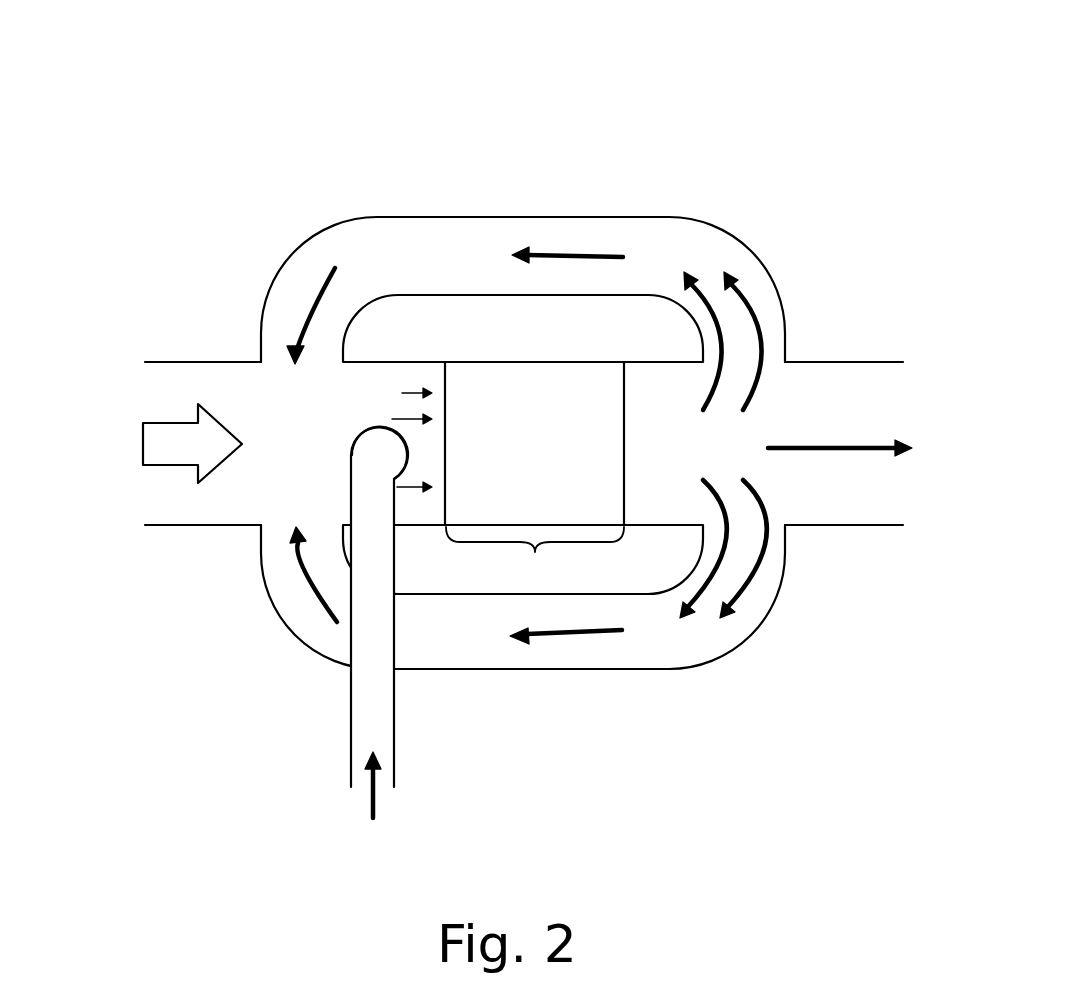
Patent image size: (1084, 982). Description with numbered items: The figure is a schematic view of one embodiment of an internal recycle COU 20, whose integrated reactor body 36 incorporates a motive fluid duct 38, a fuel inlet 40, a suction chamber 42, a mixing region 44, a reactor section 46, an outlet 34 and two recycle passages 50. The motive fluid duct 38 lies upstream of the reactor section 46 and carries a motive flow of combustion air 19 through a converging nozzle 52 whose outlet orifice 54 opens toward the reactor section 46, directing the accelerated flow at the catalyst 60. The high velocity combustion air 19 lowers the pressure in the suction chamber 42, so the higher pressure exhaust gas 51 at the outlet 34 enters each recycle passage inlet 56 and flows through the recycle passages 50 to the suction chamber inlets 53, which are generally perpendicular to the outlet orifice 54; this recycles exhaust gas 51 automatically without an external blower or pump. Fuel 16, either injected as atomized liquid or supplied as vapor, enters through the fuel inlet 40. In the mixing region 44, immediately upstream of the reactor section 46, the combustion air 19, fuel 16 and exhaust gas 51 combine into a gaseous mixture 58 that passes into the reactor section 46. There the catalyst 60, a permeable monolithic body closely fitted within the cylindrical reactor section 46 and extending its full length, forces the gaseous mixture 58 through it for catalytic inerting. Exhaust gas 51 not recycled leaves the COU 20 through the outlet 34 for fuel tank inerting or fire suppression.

The fuel 16 is at (155, 466).
The combustion air 19 is at (372, 802).
The internal recycle COU 20 is at (818, 108).
The outlet 34 is at (867, 362).
The integrated reactor body 36 is at (547, 362).
The motive fluid duct 38 is at (395, 720).
The fuel inlet 40 is at (190, 362).
The suction chamber 42 is at (302, 480).
The mixing region 44 is at (413, 503).
The reactor section 46 is at (535, 555).
The recycle passage 50 is at (415, 217).
The exhaust gas 51 is at (847, 446).
The nozzle 52 is at (378, 448).
The suction chamber inlet 53 is at (262, 360).
The outlet orifice 54 is at (405, 452).
The recycle passage inlet 56 is at (778, 355).
The gaseous mixture 58 is at (402, 393).
The catalyst 60 is at (541, 470).